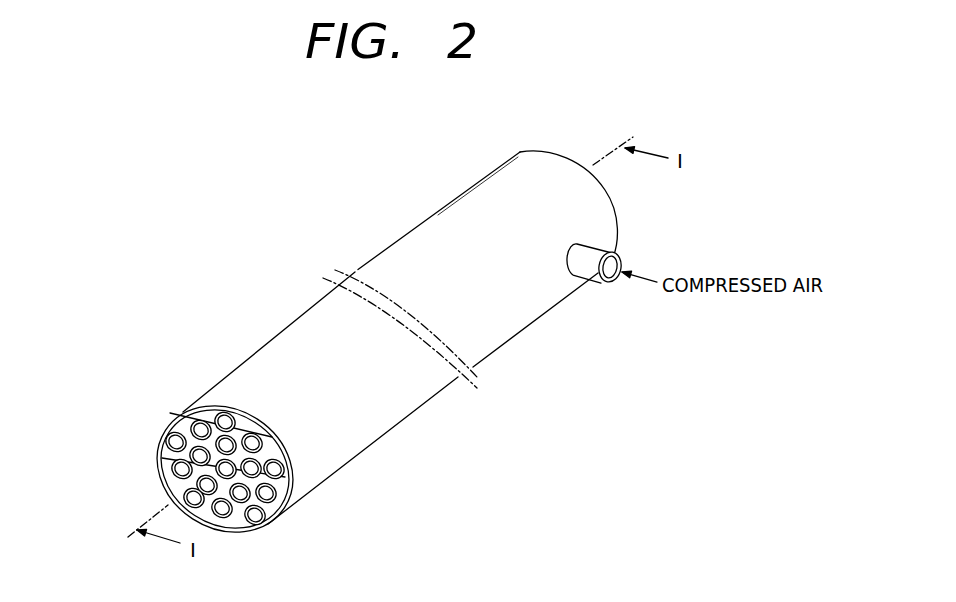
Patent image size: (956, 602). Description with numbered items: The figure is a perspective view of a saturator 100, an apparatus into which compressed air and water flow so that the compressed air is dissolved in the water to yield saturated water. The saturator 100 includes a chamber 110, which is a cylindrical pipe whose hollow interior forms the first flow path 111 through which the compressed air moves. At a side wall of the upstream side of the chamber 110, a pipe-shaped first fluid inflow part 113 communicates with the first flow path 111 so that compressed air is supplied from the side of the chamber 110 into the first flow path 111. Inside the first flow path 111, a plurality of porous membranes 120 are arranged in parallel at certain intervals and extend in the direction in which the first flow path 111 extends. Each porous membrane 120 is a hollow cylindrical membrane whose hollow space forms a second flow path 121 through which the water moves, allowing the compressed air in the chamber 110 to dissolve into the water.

The saturator 100 is at (380, 148).
The chamber 110 is at (313, 335).
The first flow path 111 is at (178, 486).
The first fluid inflow part 113 is at (589, 284).
The porous membrane 120 is at (185, 445).
The second flow path 121 is at (172, 466).